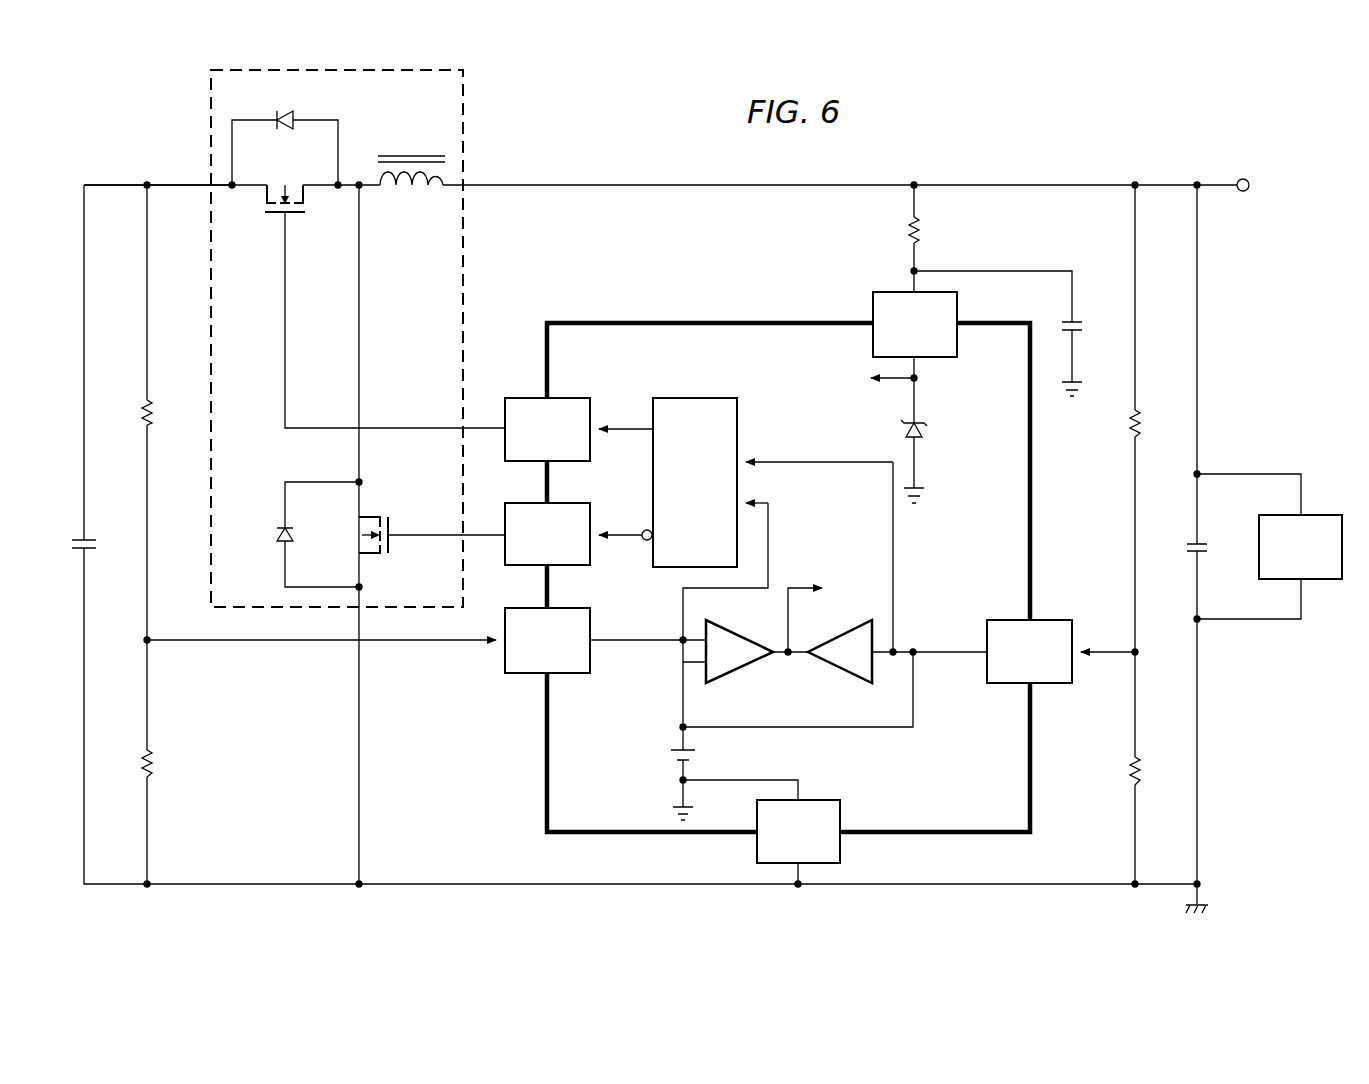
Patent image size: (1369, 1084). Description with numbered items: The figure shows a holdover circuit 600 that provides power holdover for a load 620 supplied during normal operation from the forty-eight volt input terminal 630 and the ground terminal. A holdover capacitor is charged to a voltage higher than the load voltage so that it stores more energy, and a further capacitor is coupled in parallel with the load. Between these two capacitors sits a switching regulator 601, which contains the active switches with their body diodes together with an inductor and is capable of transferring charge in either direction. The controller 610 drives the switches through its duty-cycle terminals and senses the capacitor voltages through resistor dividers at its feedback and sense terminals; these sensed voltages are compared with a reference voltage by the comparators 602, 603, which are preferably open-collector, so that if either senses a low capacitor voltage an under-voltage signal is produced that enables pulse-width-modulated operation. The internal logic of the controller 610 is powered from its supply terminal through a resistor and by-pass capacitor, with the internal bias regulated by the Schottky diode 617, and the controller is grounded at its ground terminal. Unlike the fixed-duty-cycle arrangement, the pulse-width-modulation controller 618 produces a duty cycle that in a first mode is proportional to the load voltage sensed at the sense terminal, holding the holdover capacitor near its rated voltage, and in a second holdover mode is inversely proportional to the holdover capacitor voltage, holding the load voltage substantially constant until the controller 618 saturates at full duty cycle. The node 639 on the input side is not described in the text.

The holdover circuit 600 is at (1114, 131).
The switching regulator 601 is at (206, 127).
The controller 610 is at (699, 320).
The Schottky diode 617 is at (927, 433).
The PWM controller 618 is at (714, 510).
The comparator 602 is at (738, 662).
The comparator 603 is at (832, 664).
The load 620 is at (1323, 581).
The input terminal 630 is at (1246, 178).
The input node 639 is at (145, 189).